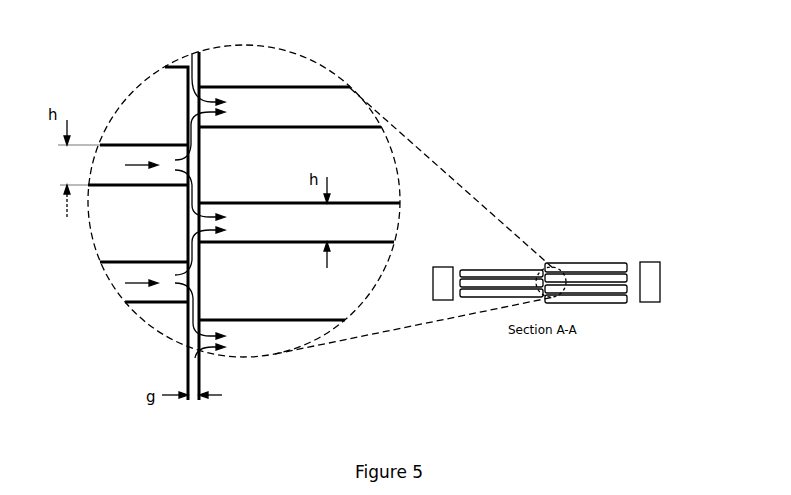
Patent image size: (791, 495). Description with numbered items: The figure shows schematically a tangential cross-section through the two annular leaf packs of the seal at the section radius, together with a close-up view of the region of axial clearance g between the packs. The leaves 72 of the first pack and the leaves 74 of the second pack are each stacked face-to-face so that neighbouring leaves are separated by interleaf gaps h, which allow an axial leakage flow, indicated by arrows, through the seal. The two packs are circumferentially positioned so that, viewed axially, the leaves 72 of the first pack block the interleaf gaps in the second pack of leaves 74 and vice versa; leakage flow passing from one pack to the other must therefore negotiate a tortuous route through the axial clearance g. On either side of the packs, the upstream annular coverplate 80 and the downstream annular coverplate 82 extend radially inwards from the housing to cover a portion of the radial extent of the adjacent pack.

The leaves 72 is at (147, 103).
The leaves 74 is at (365, 158).
The upstream annular coverplate 80 is at (452, 267).
The downstream annular coverplate 82 is at (660, 278).